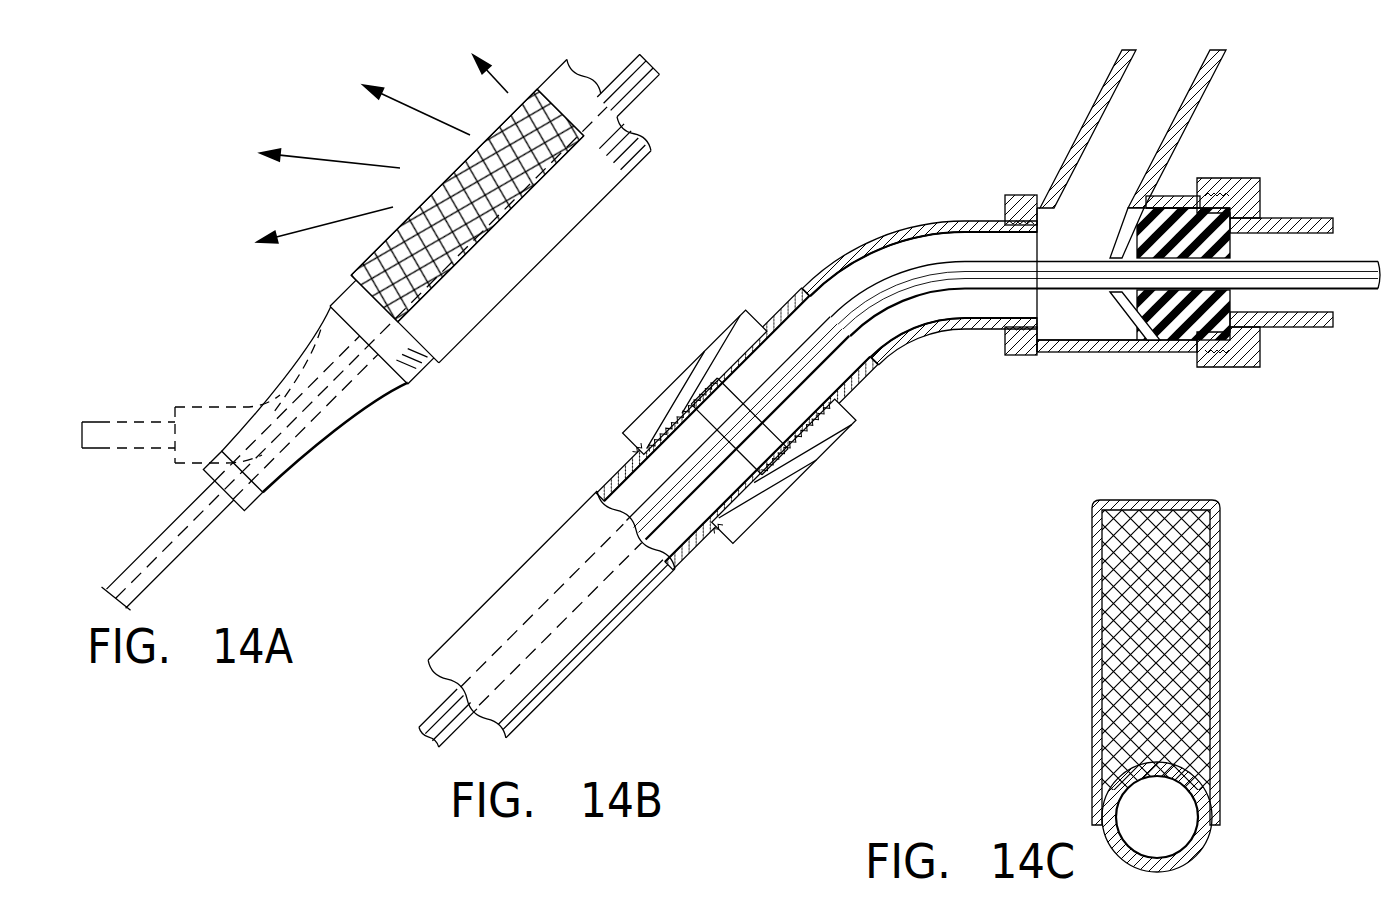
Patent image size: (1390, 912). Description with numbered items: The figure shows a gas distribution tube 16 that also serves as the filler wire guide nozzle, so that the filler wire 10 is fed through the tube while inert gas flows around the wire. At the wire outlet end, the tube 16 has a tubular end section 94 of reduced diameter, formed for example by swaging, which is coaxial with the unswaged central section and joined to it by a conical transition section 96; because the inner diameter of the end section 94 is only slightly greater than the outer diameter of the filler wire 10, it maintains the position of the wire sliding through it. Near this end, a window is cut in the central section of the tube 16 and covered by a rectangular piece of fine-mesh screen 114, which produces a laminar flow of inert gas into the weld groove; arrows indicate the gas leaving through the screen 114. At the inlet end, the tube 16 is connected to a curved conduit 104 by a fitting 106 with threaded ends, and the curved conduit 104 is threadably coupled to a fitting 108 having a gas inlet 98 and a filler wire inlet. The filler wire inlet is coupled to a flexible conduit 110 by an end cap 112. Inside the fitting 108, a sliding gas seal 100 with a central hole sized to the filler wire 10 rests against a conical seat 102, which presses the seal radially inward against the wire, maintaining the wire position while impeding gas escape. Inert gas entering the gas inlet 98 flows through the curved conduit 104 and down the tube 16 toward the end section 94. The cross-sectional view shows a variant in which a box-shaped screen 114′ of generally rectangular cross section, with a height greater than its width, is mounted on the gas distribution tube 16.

In FIG. 14A, the filler wire 10 is at (162, 572).
In FIG. 14B, the filler wire 10 is at (442, 703).
In FIG. 14A, the gas distribution tube 16 is at (633, 167).
In FIG. 14B, the gas distribution tube 16 is at (542, 550).
In FIG. 14C, the gas distribution tube 16 is at (1200, 843).
In FIG. 14A, the tubular end section 94 is at (265, 492).
In FIG. 14A, the conical transition section 96 is at (362, 403).
In FIG. 14B, the gas inlet 98 is at (1090, 108).
In FIG. 14B, the sliding gas seal 100 is at (1187, 347).
In FIG. 14B, the conical seat 102 is at (1120, 313).
In FIG. 14B, the curved conduit 104 is at (925, 228).
In FIG. 14B, the fitting 106 is at (700, 362).
In FIG. 14B, the fitting 108 is at (1125, 353).
In FIG. 14B, the flexible conduit 110 is at (1290, 330).
In FIG. 14B, the end cap 112 is at (1233, 173).
In FIG. 14A, the fine-mesh screen 114 is at (510, 112).
In FIG. 14C, the box-shaped screen 114′ is at (1220, 607).